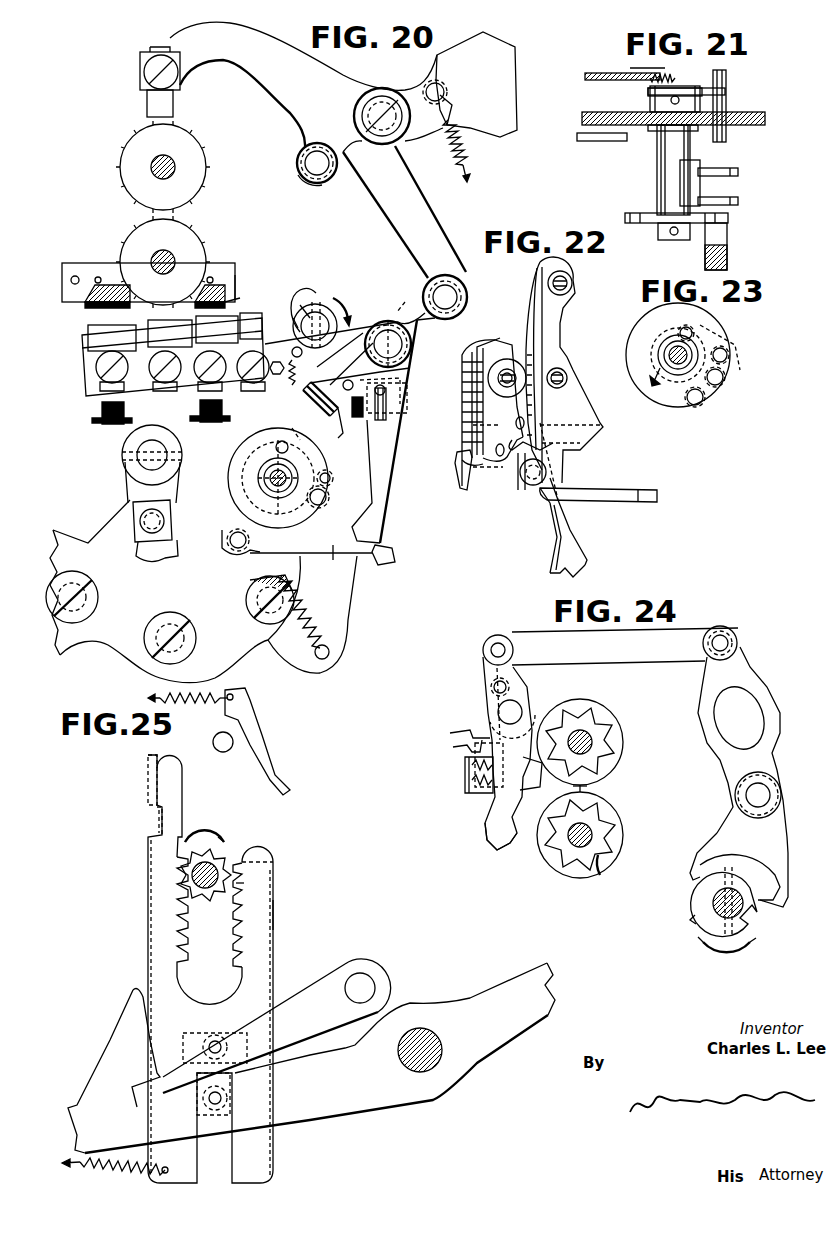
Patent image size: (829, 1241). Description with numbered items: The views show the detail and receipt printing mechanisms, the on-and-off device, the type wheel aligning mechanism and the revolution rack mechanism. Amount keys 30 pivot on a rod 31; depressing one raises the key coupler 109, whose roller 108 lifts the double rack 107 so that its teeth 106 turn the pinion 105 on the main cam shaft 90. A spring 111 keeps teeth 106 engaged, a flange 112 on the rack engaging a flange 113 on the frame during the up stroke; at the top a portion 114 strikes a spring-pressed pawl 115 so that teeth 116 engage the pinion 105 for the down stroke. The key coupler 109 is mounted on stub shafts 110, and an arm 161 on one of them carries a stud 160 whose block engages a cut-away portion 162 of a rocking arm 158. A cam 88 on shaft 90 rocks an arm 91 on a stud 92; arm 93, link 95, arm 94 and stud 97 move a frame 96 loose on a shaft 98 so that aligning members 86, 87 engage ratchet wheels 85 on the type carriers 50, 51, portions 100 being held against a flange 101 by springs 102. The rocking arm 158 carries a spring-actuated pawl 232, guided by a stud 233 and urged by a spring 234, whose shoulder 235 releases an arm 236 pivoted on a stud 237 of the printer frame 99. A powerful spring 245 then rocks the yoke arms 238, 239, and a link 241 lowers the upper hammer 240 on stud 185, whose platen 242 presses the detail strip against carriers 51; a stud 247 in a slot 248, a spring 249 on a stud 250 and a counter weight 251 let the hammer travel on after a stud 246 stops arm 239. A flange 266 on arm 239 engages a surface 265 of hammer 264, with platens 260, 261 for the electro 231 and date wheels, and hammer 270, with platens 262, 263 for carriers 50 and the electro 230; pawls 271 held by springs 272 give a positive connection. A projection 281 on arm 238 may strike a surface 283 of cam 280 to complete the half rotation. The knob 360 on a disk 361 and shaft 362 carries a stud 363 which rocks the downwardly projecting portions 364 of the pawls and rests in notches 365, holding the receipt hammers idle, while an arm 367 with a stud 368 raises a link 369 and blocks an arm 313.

In FIG. 20, the platen 242 is at (152, 110).
In FIG. 20, the upper printer hammer 240 is at (242, 64).
In FIG. 20, the type carriers 51 is at (190, 148).
In FIG. 24, the type carriers 51 is at (612, 719).
In FIG. 20, the type carriers 50 is at (190, 242).
In FIG. 24, the type carriers 50 is at (620, 809).
In FIG. 20, the stud 185 is at (377, 108).
In FIG. 20, the stud 250 is at (440, 86).
In FIG. 20, the counter weight 251 is at (500, 57).
In FIG. 20, the spring 249 is at (466, 152).
In FIG. 20, the stud 247 is at (311, 166).
In FIG. 20, the slot 248 is at (316, 180).
In FIG. 20, the link 241 is at (380, 201).
In FIG. 20, the arm 239 is at (416, 292).
In FIG. 22, the arm 239 is at (562, 318).
In FIG. 20, the hammer 264 is at (406, 302).
In FIG. 20, the stud 237 is at (412, 343).
In FIG. 20, the main cam shaft 90 is at (320, 309).
In FIG. 24, the main cam shaft 90 is at (715, 897).
In FIG. 25, the main cam shaft 90 is at (210, 897).
In FIG. 20, the surface 283 is at (309, 302).
In FIG. 20, the cam 280 is at (351, 302).
In FIG. 20, the platen 261 is at (296, 304).
In FIG. 20, the spring 272 is at (294, 322).
In FIG. 20, the electro 230 is at (92, 309).
In FIG. 20, the electro 231 is at (236, 286).
In FIG. 20, the platen 260 is at (228, 305).
In FIG. 20, the hammer 270 is at (94, 401).
In FIG. 20, the platen 263 is at (96, 328).
In FIG. 20, the platen 262 is at (160, 330).
In FIG. 20, the stub shafts 110 is at (155, 445).
In FIG. 25, the stub shafts 110 is at (362, 981).
In FIG. 20, the arm 161 is at (176, 478).
In FIG. 20, the stud 160 is at (160, 522).
In FIG. 20, the cut-away portion 162 is at (148, 558).
In FIG. 20, the rocking arm 158 is at (88, 546).
In FIG. 20, the disk 361 is at (250, 494).
In FIG. 21, the disk 361 is at (640, 213).
In FIG. 23, the disk 361 is at (714, 328).
In FIG. 20, the downwardly projecting portion 364 is at (278, 448).
In FIG. 20, the notch 365 is at (292, 430).
In FIG. 20, the surface 265 is at (290, 400).
In FIG. 20, the flange 266 is at (326, 409).
In FIG. 22, the flange 266 is at (626, 490).
In FIG. 20, the spring 245 is at (368, 420).
In FIG. 20, the pawl 271 is at (340, 456).
In FIG. 21, the pawl 271 is at (740, 173).
In FIG. 20, the knob 360 is at (329, 497).
In FIG. 21, the knob 360 is at (728, 229).
In FIG. 23, the knob 360 is at (724, 377).
In FIG. 20, the stud 363 is at (326, 488).
In FIG. 21, the stud 363 is at (700, 186).
In FIG. 23, the stud 363 is at (703, 402).
In FIG. 20, the arm 236 is at (385, 497).
In FIG. 22, the arm 236 is at (573, 552).
In FIG. 20, the shoulder 235 is at (364, 562).
In FIG. 22, the shoulder 235 is at (575, 575).
In FIG. 20, the stud 233 is at (262, 547).
In FIG. 20, the pawl 232 is at (333, 555).
In FIG. 20, the spring 234 is at (316, 621).
In FIG. 21, the link 369 is at (600, 80).
In FIG. 21, the arm 367 is at (726, 90).
In FIG. 23, the arm 367 is at (694, 337).
In FIG. 21, the printer frame 99 is at (748, 112).
In FIG. 21, the stud 368 is at (727, 136).
In FIG. 23, the stud 368 is at (727, 355).
In FIG. 21, the arm 313 is at (607, 142).
In FIG. 22, the arm 238 is at (498, 425).
In FIG. 22, the projection 281 is at (476, 453).
In FIG. 22, the stud 246 is at (530, 482).
In FIG. 23, the shaft 362 is at (680, 372).
In FIG. 24, the link 95 is at (536, 630).
In FIG. 24, the arm 94 is at (487, 669).
In FIG. 24, the stud 97 is at (508, 687).
In FIG. 24, the shaft 98 is at (520, 708).
In FIG. 24, the frame 96 is at (492, 722).
In FIG. 24, the forwardly extending portions 100 is at (455, 733).
In FIG. 24, the flange 101 is at (462, 749).
In FIG. 24, the springs 102 is at (476, 797).
In FIG. 24, the ratchet wheel 85 is at (615, 748).
In FIG. 24, the aligning member 87 is at (529, 785).
In FIG. 24, the aligning member 86 is at (503, 845).
In FIG. 24, the arm 93 is at (765, 690).
In FIG. 24, the stud 92 is at (768, 795).
In FIG. 24, the arm 91 is at (723, 827).
In FIG. 24, the cam 88 is at (755, 928).
In FIG. 25, the flange 113 is at (150, 757).
In FIG. 25, the flange 112 is at (160, 821).
In FIG. 25, the pinion 105 is at (222, 858).
In FIG. 25, the portion 114 is at (260, 850).
In FIG. 25, the teeth 106 is at (182, 895).
In FIG. 25, the teeth 116 is at (244, 883).
In FIG. 25, the double rack 107 is at (268, 929).
In FIG. 25, the pawl 115 is at (277, 789).
In FIG. 25, the key coupler 109 is at (302, 986).
In FIG. 25, the roller 108 is at (230, 1034).
In FIG. 25, the amount keys 30 is at (477, 996).
In FIG. 25, the rod 31 is at (416, 1066).
In FIG. 25, the spring 111 is at (106, 1172).